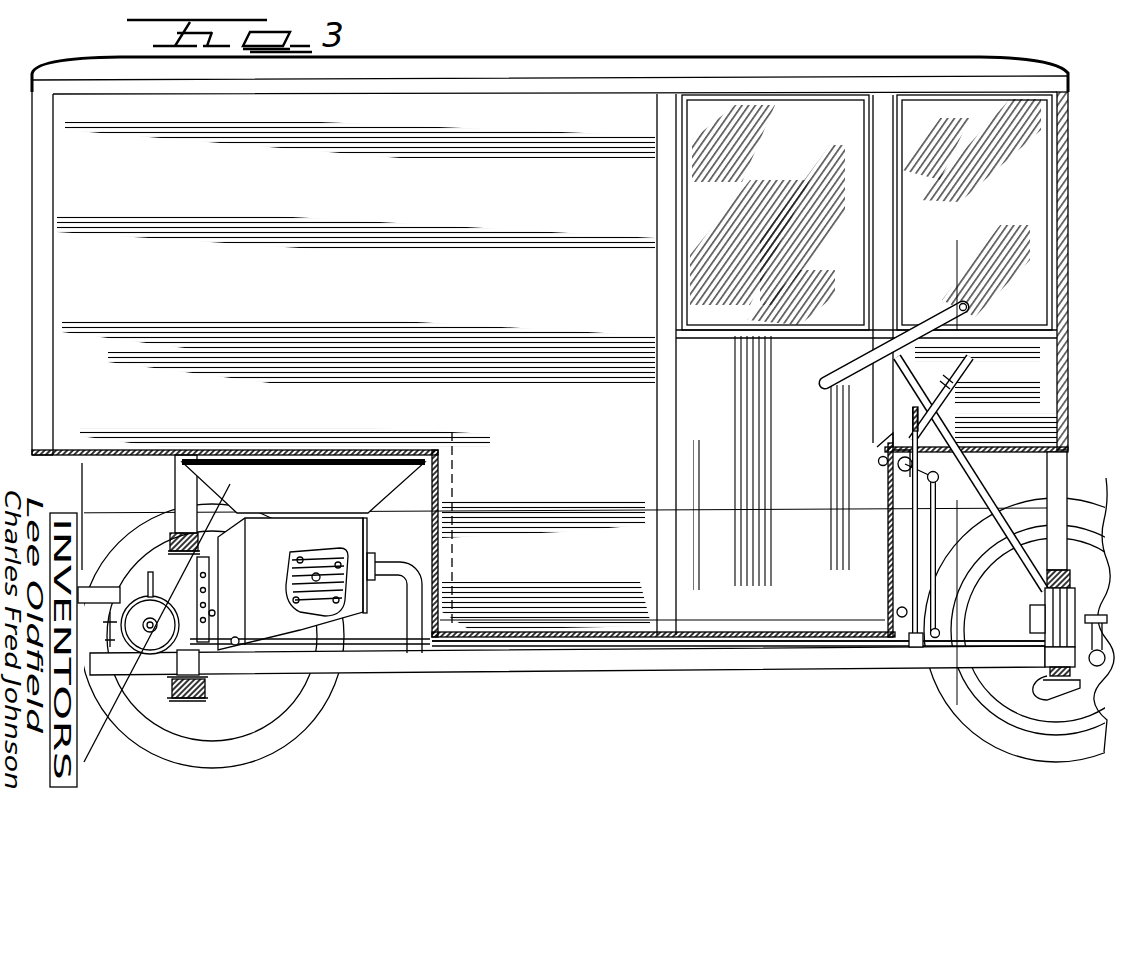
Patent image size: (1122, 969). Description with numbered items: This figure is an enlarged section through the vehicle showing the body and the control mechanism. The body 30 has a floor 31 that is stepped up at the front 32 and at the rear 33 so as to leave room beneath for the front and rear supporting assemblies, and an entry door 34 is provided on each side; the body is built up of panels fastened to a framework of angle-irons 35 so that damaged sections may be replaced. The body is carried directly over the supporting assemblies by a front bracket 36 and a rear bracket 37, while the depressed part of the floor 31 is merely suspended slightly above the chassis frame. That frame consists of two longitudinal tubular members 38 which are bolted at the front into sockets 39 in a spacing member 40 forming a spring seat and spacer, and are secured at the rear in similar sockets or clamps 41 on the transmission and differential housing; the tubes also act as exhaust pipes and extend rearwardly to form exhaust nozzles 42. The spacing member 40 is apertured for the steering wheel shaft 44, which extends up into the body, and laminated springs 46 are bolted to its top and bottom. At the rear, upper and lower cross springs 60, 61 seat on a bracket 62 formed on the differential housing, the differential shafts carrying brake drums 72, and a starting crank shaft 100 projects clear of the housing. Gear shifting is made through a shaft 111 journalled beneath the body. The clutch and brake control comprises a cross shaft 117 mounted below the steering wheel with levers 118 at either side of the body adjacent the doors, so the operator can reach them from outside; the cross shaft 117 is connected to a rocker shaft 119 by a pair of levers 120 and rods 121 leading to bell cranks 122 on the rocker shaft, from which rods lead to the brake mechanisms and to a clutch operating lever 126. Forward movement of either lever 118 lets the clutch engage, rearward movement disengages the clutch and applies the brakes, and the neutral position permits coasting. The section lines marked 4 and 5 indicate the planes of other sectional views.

The section line 4- 4 is at (962, 243).
The section line 5- 5 is at (72, 504).
The body 30 is at (550, 347).
The floor 31 is at (763, 632).
The front stepped-up floor portion 32 is at (1012, 452).
The rear stepped-up floor portion 33 is at (50, 471).
The entry door 34 is at (701, 430).
The angle-irons 35 is at (612, 551).
The front body bracket 36 is at (1070, 487).
The rear body bracket 37 is at (180, 480).
The longitudinal chassis frame member 38 is at (673, 660).
The socket 39 is at (1056, 681).
The front axle spacing member 40 is at (1030, 615).
The socket or clamp 41 is at (200, 668).
The exhaust nozzle 42 is at (182, 670).
The steering wheel shaft 44 is at (882, 366).
The laminated spring 46 is at (1070, 580).
The upper cross spring 60 is at (197, 534).
The lower cross spring 61 is at (172, 698).
The spring bracket 62 is at (172, 560).
The brake drum 72 is at (156, 627).
The starting crank shaft 100 is at (120, 622).
The shaft 111 is at (362, 644).
The cross shaft 117 is at (878, 465).
The clutch and brake lever 118 is at (960, 373).
The rocker shaft 119 is at (897, 613).
The lever 120 is at (958, 421).
The rod 121 is at (935, 533).
The bell crank 122 is at (918, 648).
The clutch operating lever 126 is at (238, 640).